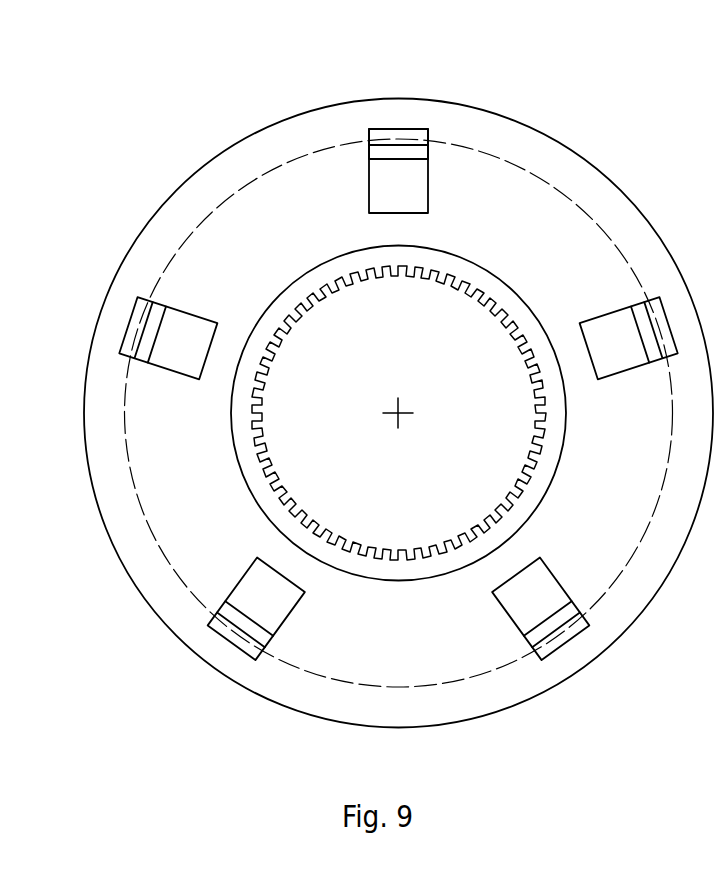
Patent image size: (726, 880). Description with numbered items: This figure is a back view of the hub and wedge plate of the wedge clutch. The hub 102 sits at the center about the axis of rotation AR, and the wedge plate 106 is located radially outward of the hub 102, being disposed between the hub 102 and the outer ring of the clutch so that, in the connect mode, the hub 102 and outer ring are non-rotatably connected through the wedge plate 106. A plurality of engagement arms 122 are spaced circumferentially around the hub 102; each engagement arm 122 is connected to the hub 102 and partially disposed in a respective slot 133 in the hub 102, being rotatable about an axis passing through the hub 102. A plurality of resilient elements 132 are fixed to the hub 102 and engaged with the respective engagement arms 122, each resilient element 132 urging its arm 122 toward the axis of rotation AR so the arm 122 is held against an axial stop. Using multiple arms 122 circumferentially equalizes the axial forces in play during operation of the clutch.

The wedge plate 106 is at (555, 134).
The hub 102 is at (278, 312).
The engagement arm 122 is at (402, 126).
The resilient element 132 is at (385, 136).
The slot 133 is at (369, 160).
The axis of rotation AR is at (401, 410).